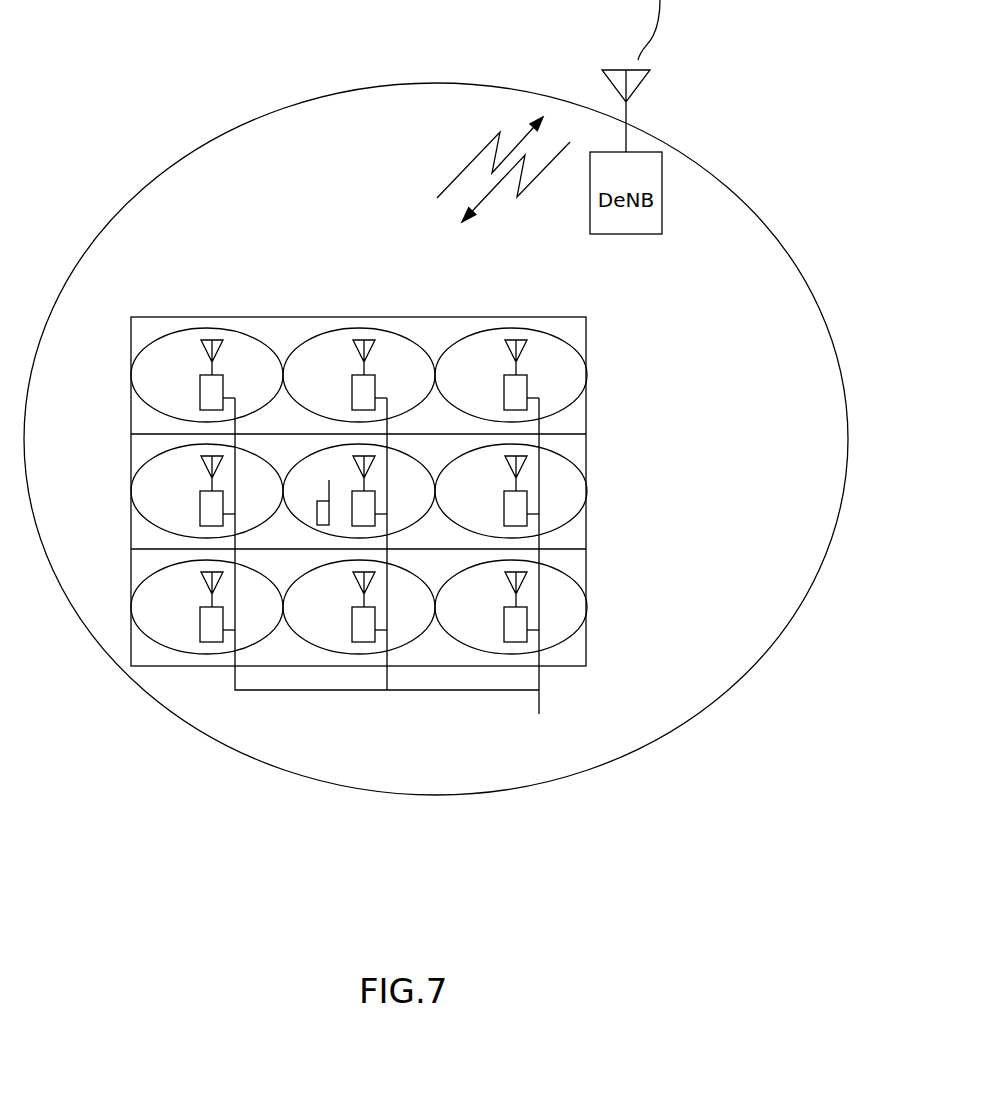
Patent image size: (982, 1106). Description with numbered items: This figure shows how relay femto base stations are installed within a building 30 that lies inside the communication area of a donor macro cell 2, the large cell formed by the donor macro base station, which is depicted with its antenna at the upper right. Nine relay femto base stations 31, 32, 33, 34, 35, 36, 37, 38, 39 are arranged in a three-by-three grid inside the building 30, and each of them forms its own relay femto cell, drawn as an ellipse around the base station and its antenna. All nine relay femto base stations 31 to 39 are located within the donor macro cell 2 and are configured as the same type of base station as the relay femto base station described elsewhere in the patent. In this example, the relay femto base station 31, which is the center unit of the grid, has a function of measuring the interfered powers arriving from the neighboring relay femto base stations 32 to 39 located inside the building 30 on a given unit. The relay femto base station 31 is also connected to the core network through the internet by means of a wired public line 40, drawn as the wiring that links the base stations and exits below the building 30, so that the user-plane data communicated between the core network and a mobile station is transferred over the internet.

The donor macro cell 2 is at (433, 795).
The building 30 is at (156, 317).
The relay femto base station 31 is at (376, 503).
The relay femto base station 32 is at (200, 386).
The relay femto base station 33 is at (352, 388).
The relay femto base station 34 is at (504, 389).
The relay femto base station 35 is at (200, 503).
The relay femto base station 36 is at (504, 504).
The relay femto base station 37 is at (200, 620).
The relay femto base station 38 is at (352, 620).
The relay femto base station 39 is at (504, 620).
The wired public line 40 is at (538, 702).